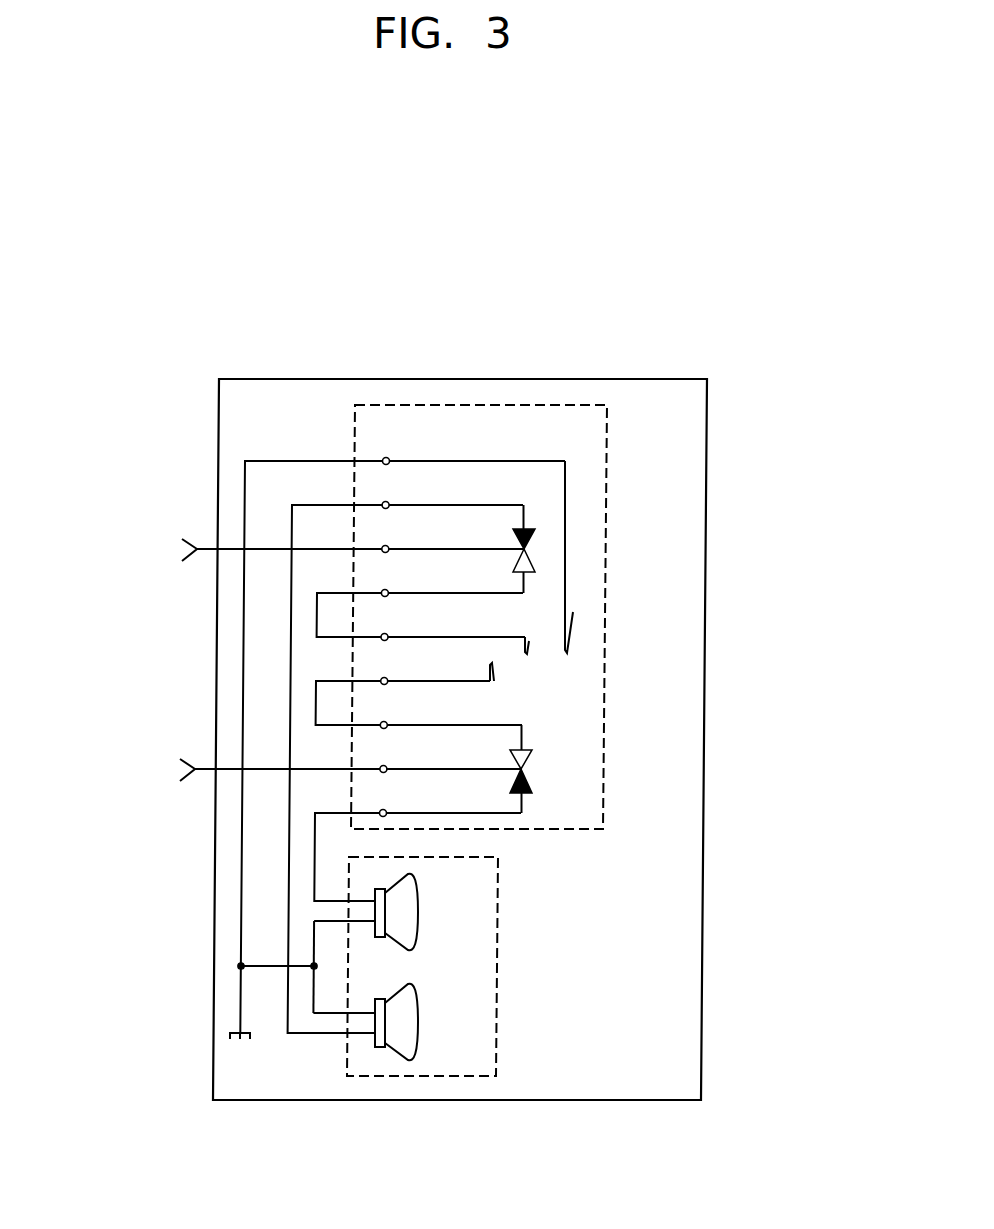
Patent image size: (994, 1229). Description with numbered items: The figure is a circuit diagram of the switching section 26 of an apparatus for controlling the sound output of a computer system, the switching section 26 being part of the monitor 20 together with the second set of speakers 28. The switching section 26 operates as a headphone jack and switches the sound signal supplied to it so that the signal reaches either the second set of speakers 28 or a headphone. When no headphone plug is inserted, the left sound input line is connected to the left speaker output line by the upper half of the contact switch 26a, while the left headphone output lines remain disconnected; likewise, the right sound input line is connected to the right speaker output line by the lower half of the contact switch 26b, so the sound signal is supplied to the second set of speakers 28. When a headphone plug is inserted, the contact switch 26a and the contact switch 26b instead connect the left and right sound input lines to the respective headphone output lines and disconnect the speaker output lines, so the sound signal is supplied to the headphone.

The monitor 20 is at (449, 378).
The switching section 26 is at (605, 619).
The contact switch 26a is at (525, 549).
The contact switch 26b is at (523, 768).
The second set of speakers 28 is at (497, 970).